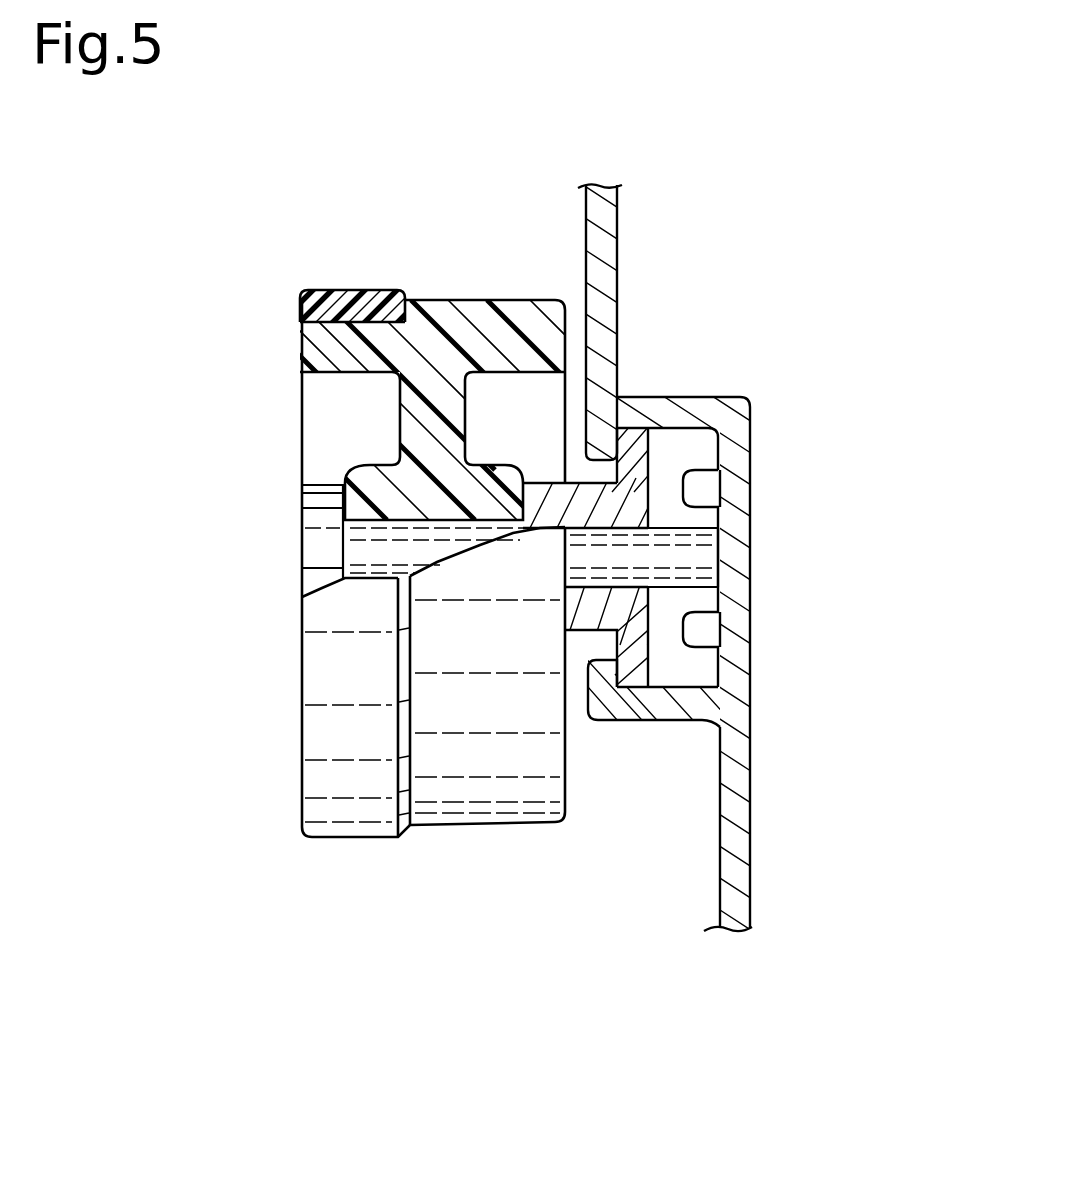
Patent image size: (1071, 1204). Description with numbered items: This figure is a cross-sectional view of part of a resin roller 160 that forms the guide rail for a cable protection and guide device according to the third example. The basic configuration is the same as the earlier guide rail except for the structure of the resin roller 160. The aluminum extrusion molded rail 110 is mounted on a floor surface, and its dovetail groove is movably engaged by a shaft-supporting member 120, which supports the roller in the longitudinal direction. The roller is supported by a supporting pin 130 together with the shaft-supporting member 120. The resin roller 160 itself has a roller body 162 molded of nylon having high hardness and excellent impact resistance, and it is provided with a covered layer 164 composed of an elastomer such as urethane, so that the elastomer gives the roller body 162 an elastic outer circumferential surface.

The aluminum extrusion molded rail 110 is at (735, 856).
The shaft-supporting member 120 is at (636, 450).
The supporting pin 130 is at (320, 541).
The resin roller 160 is at (423, 882).
The roller body 162 is at (332, 350).
The covered layer 164 is at (353, 306).